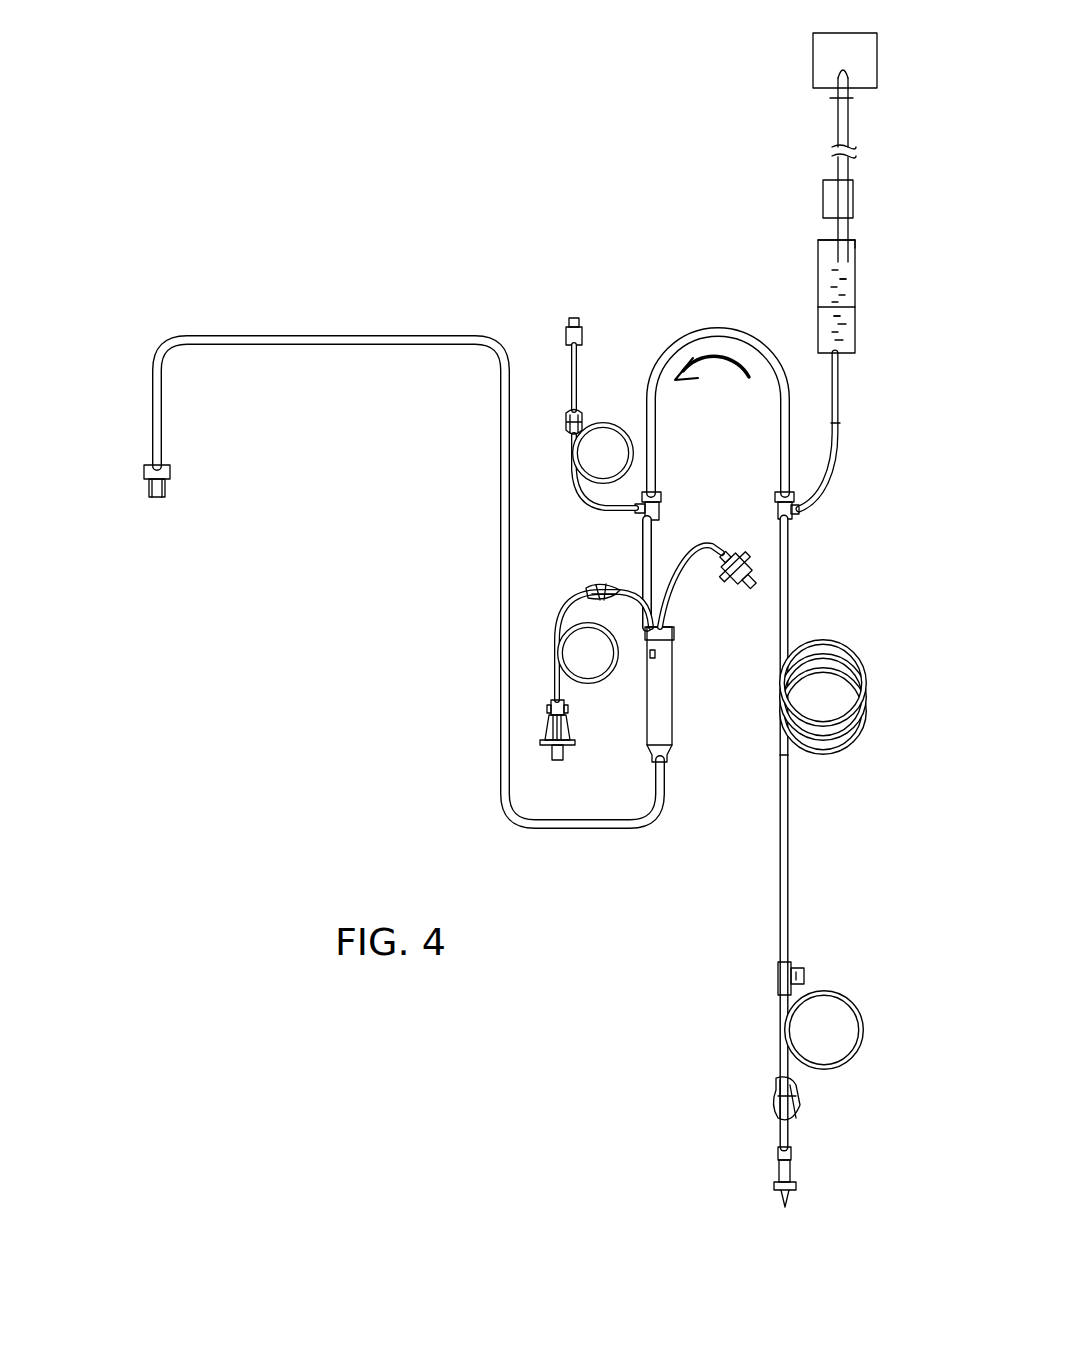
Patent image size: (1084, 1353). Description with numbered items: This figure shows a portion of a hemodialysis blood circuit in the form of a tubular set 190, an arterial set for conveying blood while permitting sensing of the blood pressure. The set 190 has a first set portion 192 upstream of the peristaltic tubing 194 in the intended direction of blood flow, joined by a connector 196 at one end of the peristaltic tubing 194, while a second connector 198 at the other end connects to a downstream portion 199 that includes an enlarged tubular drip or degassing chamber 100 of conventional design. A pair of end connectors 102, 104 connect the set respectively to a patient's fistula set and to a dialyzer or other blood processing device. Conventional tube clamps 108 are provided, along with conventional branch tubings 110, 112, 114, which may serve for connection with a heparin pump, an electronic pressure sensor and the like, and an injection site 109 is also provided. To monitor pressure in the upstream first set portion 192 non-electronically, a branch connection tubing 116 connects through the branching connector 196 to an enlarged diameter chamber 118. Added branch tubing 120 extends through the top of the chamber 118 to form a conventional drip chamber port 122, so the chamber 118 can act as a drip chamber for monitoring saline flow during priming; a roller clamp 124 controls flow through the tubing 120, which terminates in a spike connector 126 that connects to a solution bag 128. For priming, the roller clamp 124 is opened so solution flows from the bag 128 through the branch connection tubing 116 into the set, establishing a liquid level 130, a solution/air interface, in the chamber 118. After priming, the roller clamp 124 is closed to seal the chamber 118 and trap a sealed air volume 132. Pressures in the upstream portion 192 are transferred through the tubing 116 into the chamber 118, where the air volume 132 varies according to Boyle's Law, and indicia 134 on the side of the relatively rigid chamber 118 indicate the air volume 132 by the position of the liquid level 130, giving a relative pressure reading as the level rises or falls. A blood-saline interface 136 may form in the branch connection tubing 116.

The drip or degassing chamber 100 is at (660, 718).
The end connector 102 is at (778, 1176).
The end connector 104 is at (171, 486).
The tube clamp 108 is at (578, 414).
The injection site 109 is at (777, 979).
The branch tubing 110 is at (572, 592).
The branch tubing 112 is at (558, 488).
The branch tubing 114 is at (706, 546).
The branch connection tubing 116 is at (800, 518).
The chamber 118 is at (815, 284).
The branch tubing 120 is at (838, 119).
The drip chamber port 122 is at (818, 246).
The roller clamp 124 is at (823, 195).
The spike connector 126 is at (838, 75).
The solution bag 128 is at (812, 49).
The liquid level 130 is at (852, 296).
The air volume 132 is at (852, 262).
The indicia 134 is at (836, 318).
The blood-saline interface 136 is at (823, 502).
The tubular set 190 is at (497, 751).
The first set portion 192 is at (780, 851).
The peristaltic tubing 194 is at (735, 336).
The connector 196 is at (776, 504).
The second connector 198 is at (660, 494).
The downstream portion 199 is at (572, 830).